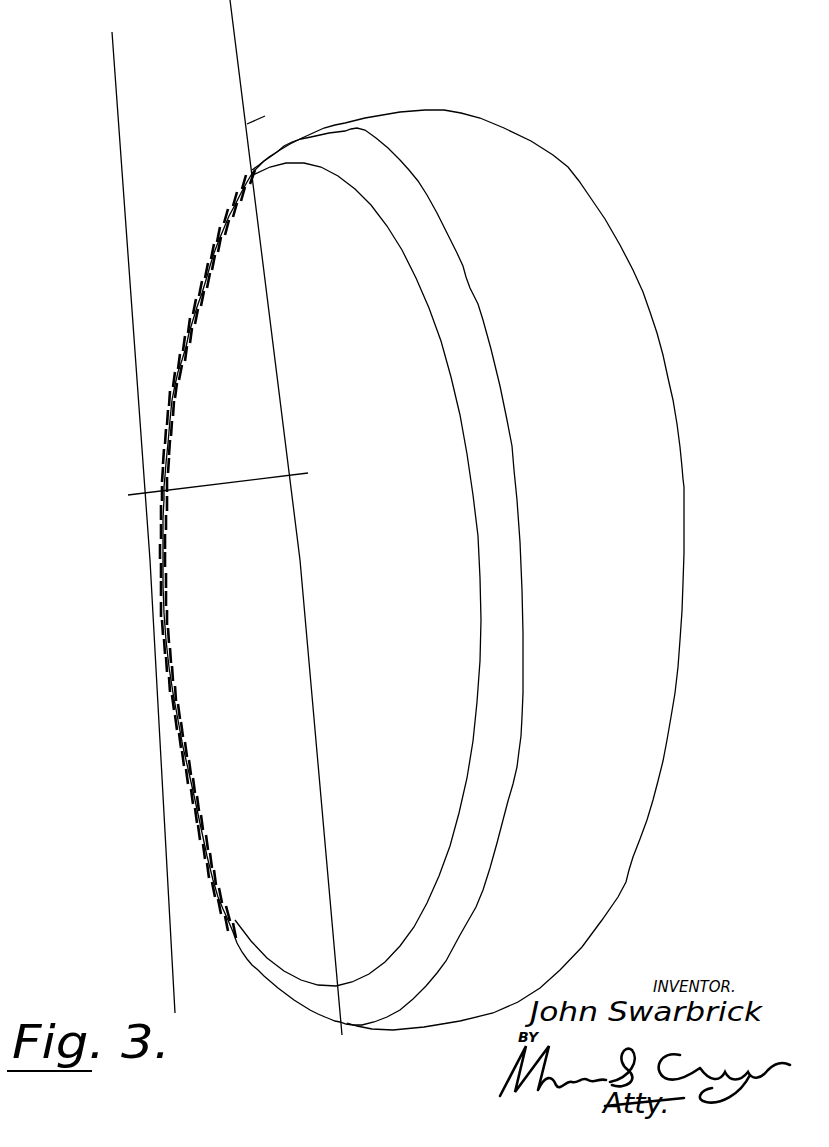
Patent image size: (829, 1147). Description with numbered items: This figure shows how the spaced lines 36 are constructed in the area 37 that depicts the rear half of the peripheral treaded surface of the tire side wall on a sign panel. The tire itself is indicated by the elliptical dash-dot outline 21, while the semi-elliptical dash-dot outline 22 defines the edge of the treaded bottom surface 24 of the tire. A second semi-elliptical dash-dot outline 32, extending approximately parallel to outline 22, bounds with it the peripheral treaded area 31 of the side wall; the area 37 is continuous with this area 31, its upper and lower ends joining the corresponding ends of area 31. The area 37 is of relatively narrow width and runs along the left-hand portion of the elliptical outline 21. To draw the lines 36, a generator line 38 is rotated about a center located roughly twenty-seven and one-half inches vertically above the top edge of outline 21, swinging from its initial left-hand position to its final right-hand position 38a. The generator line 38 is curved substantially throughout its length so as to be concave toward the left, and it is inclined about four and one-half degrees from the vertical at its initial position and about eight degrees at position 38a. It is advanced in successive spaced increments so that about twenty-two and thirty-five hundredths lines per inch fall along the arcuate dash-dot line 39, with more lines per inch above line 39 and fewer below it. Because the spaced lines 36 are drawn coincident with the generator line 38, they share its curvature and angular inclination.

The elliptical dash-dot outline 21 is at (676, 443).
The semi-elliptical dash-dot outline 22 is at (516, 767).
The treaded bottom surface 24 is at (617, 634).
The peripheral treaded area 31 is at (507, 677).
The semi-elliptical dash-dot outline 32 is at (472, 745).
The spaced lines 36 is at (163, 491).
The area depicting rear half of peripheral treaded surface 37 is at (185, 377).
The generator line 38 is at (127, 252).
The final right-hand position of generator line 38a is at (279, 111).
The arcuate dash-dot line 39 is at (236, 488).